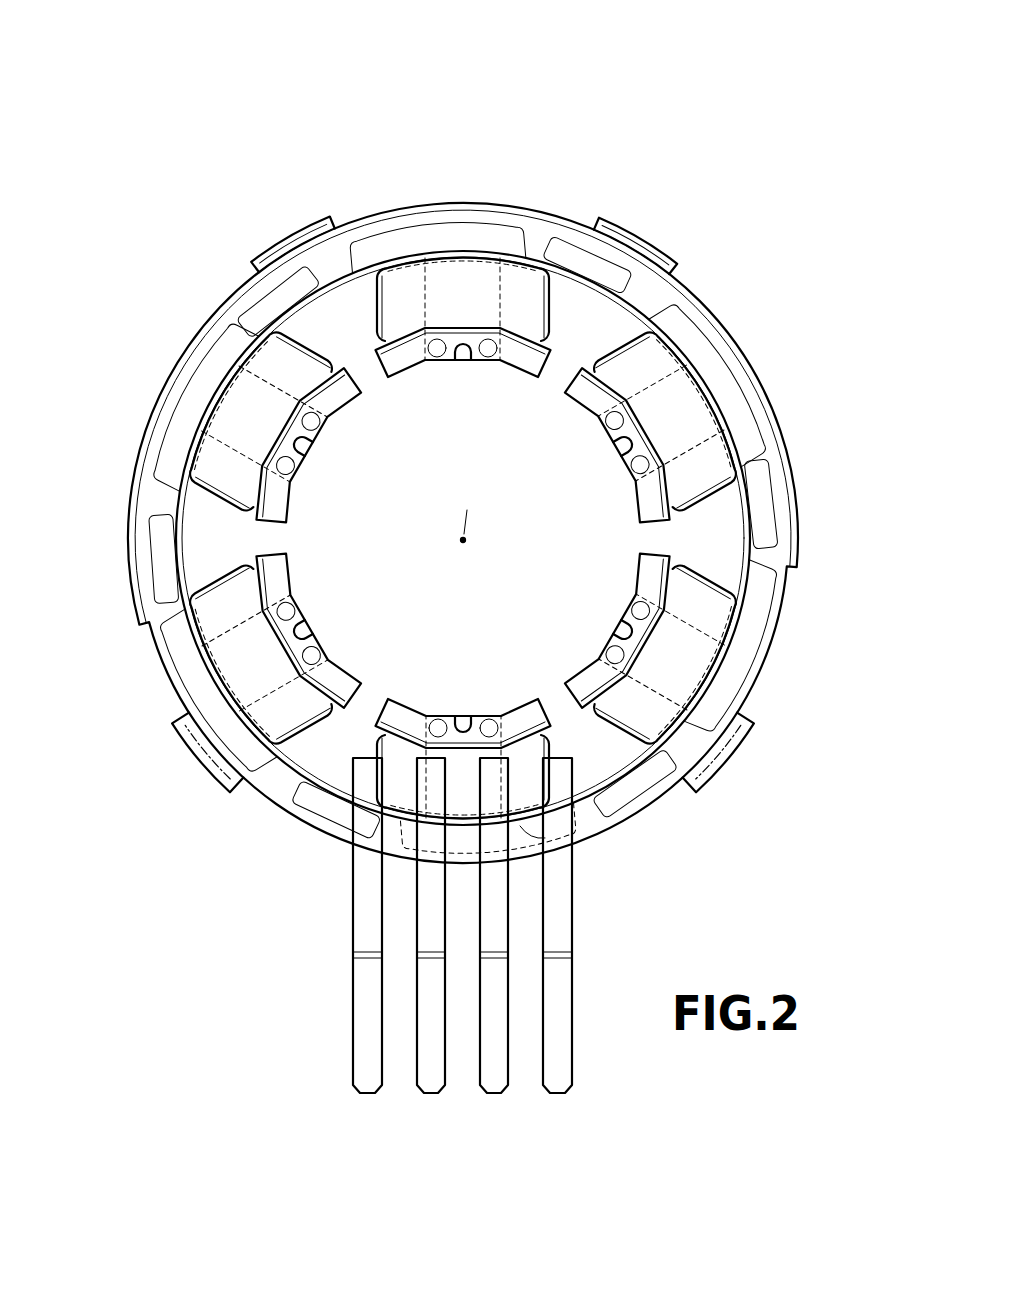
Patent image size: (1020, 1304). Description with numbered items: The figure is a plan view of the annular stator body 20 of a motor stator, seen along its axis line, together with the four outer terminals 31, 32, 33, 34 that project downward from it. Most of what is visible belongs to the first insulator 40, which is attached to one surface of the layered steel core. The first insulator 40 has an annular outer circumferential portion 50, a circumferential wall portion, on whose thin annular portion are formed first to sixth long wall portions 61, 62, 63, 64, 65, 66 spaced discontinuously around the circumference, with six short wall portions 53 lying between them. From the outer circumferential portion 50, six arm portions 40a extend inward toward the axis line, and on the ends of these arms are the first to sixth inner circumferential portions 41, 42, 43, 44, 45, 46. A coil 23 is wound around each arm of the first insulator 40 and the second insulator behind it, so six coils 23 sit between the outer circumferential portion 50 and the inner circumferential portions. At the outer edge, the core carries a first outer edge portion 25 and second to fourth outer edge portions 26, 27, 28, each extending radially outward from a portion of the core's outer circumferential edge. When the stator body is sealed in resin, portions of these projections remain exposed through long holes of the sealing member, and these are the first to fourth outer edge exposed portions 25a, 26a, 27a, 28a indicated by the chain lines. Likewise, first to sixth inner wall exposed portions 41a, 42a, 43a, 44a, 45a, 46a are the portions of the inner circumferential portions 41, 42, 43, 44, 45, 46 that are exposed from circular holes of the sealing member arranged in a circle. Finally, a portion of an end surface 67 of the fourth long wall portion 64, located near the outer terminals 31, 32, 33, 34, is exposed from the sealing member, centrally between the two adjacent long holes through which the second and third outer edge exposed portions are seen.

The stator body 20 is at (754, 112).
The first insulator 40 is at (480, 200).
The outer circumferential portion 50 is at (537, 240).
The short wall portion 53 is at (586, 256).
The first outer edge portion 25 is at (671, 204).
The first outer edge exposed portion 25a is at (652, 270).
The second outer edge portion 26 is at (778, 773).
The second outer edge exposed portion 26a is at (742, 786).
The third outer edge portion 27 is at (174, 809).
The third outer edge exposed portion 27a is at (182, 776).
The fourth outer edge portion 28 is at (238, 207).
The fourth outer edge exposed portion 28a is at (300, 236).
The first long wall portion 61 is at (448, 240).
The second long wall portion 62 is at (722, 374).
The third long wall portion 63 is at (742, 652).
The fourth long wall portion 64 is at (492, 860).
The fifth long wall portion 65 is at (200, 704).
The sixth long wall portion 66 is at (200, 404).
The end surface 67 is at (532, 832).
The arm portion 40a is at (300, 352).
The coil 23 is at (462, 538).
The first inner circumferential portion 41 is at (463, 382).
The first inner wall exposed portion 41a is at (462, 373).
The second inner circumferential portion 42 is at (589, 465).
The second inner wall exposed portion 42a is at (612, 448).
The third inner circumferential portion 43 is at (585, 608).
The third inner wall exposed portion 43a is at (620, 622).
The fourth inner circumferential portion 44 is at (463, 692).
The fourth inner wall exposed portion 44a is at (464, 716).
The fifth inner circumferential portion 45 is at (336, 611).
The fifth inner wall exposed portion 45a is at (312, 626).
The sixth inner circumferential portion 46 is at (340, 460).
The sixth inner wall exposed portion 46a is at (313, 454).
The outer terminal 31 is at (367, 1096).
The outer terminal 32 is at (430, 1096).
The outer terminal 33 is at (493, 1096).
The outer terminal 34 is at (557, 1096).